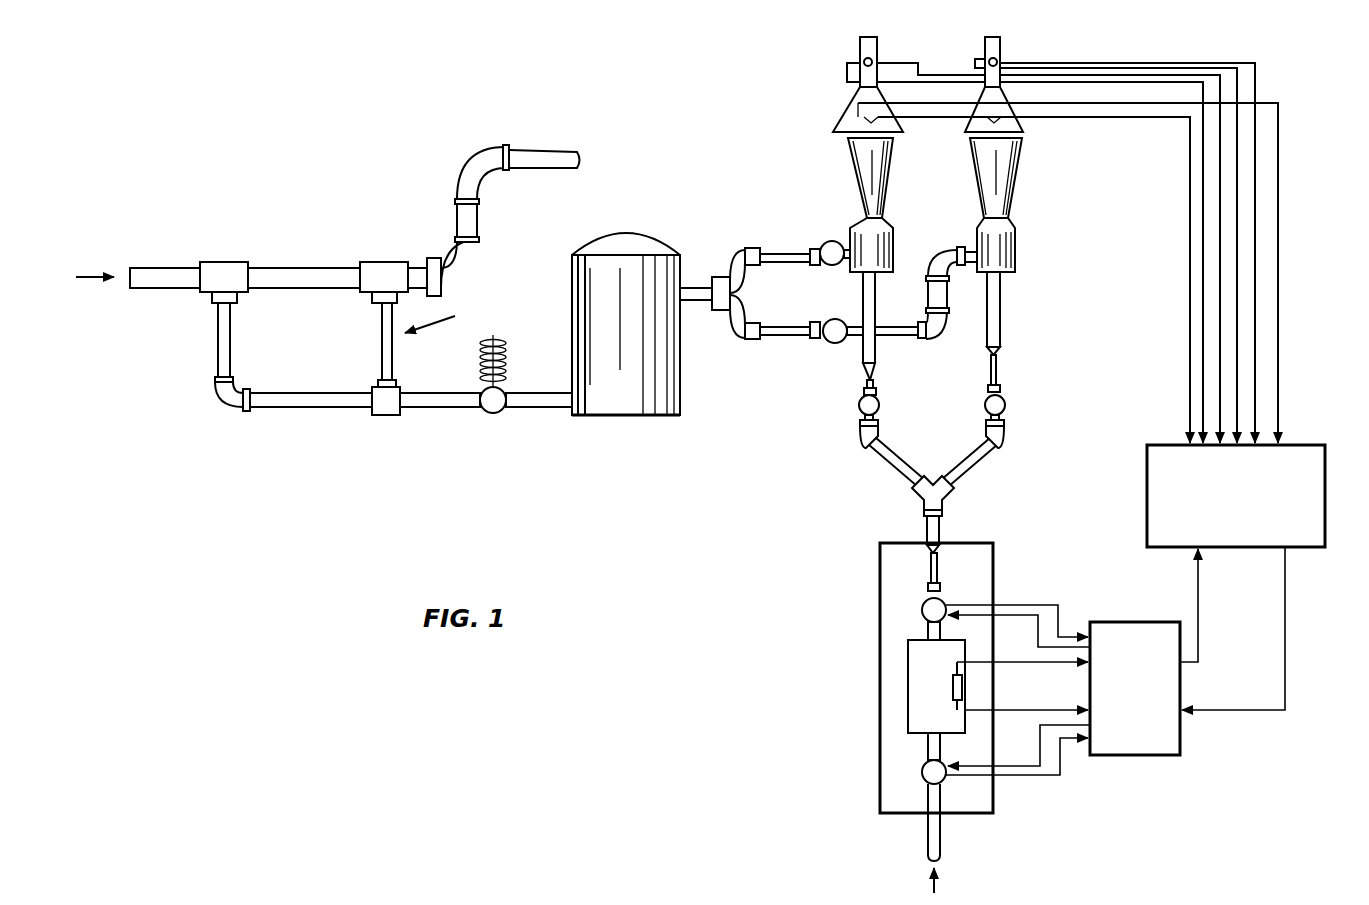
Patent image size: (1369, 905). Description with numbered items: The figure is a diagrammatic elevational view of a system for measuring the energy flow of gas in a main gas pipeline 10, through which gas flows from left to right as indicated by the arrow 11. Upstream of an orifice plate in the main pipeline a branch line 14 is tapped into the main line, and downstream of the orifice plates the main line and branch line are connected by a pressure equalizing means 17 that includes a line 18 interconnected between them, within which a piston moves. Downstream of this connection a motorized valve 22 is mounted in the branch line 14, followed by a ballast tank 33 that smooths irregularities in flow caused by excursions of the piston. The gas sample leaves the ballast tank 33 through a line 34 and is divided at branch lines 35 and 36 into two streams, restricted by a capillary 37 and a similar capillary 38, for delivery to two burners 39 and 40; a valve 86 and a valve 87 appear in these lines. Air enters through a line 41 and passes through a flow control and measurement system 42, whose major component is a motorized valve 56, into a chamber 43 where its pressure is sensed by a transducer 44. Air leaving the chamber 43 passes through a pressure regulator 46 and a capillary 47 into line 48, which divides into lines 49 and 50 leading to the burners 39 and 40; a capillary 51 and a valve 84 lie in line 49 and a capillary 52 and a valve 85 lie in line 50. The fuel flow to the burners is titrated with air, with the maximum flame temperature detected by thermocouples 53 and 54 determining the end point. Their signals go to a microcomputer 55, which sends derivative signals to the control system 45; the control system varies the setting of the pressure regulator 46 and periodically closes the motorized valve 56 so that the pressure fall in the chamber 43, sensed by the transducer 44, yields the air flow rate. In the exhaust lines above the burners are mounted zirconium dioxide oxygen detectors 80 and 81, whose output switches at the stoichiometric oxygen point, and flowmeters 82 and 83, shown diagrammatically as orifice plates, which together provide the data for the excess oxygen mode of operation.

The main gas pipeline 10 is at (167, 266).
The arrow 11 is at (95, 277).
The branch line 14 is at (218, 352).
The pressure equalizing means 17 is at (439, 316).
The line 18 is at (382, 324).
The motorized valve 22 is at (478, 368).
The ballast tank 33 is at (572, 300).
The line 34 is at (712, 280).
The branch line 35 is at (736, 251).
The branch line 36 is at (740, 337).
The capillary 37 is at (781, 263).
The capillary 38 is at (779, 336).
The burner 39 is at (890, 205).
The burner 40 is at (1014, 208).
The line 41 is at (945, 831).
The flow control and measurement system 42 is at (880, 776).
The chamber 43 is at (908, 721).
The pressure transducer 44 is at (953, 688).
The control system 45 is at (1127, 622).
The pressure regulator 46 is at (928, 600).
The capillary 47 is at (940, 569).
The line 48 is at (927, 527).
The line 49 is at (880, 346).
The line 50 is at (1000, 332).
The capillary 51 is at (876, 384).
The capillary 52 is at (997, 375).
The thermocouple 53 is at (900, 124).
The thermocouple 54 is at (968, 128).
The microcomputer 55 is at (1147, 492).
The motorized valve 56 is at (928, 764).
The zirconium dioxide oxygen detector 80 is at (864, 62).
The zirconium dioxide oxygen detector 81 is at (997, 60).
The flowmeter 82 is at (877, 58).
The flowmeter 83 is at (989, 58).
The valve 84 is at (858, 409).
The valve 85 is at (1005, 408).
The valve 86 is at (833, 240).
The valve 87 is at (840, 343).